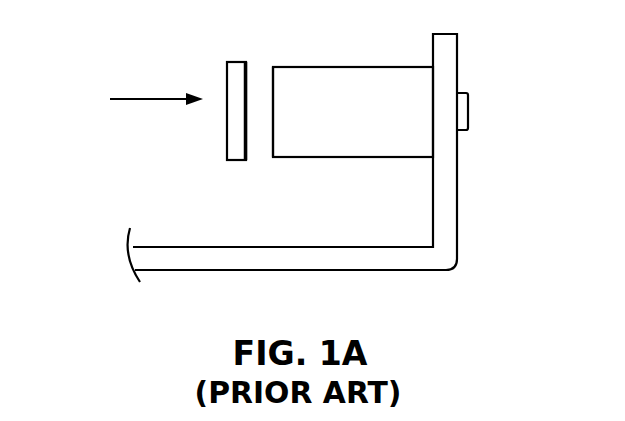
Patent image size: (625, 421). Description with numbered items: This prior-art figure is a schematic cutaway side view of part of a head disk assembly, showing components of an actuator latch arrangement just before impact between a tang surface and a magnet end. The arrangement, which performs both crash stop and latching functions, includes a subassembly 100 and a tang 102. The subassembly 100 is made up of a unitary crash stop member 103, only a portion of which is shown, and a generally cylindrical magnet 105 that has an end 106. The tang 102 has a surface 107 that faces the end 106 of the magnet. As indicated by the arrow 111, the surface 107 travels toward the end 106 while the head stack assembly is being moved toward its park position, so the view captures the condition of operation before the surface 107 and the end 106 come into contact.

The subassembly 100 is at (123, 187).
The tang 102 is at (237, 62).
The unitary crash stop member 103 is at (317, 272).
The generally cylindrical magnet 105 is at (366, 66).
The end 106 is at (273, 118).
The surface 107 is at (249, 83).
The arrow 111 is at (165, 100).